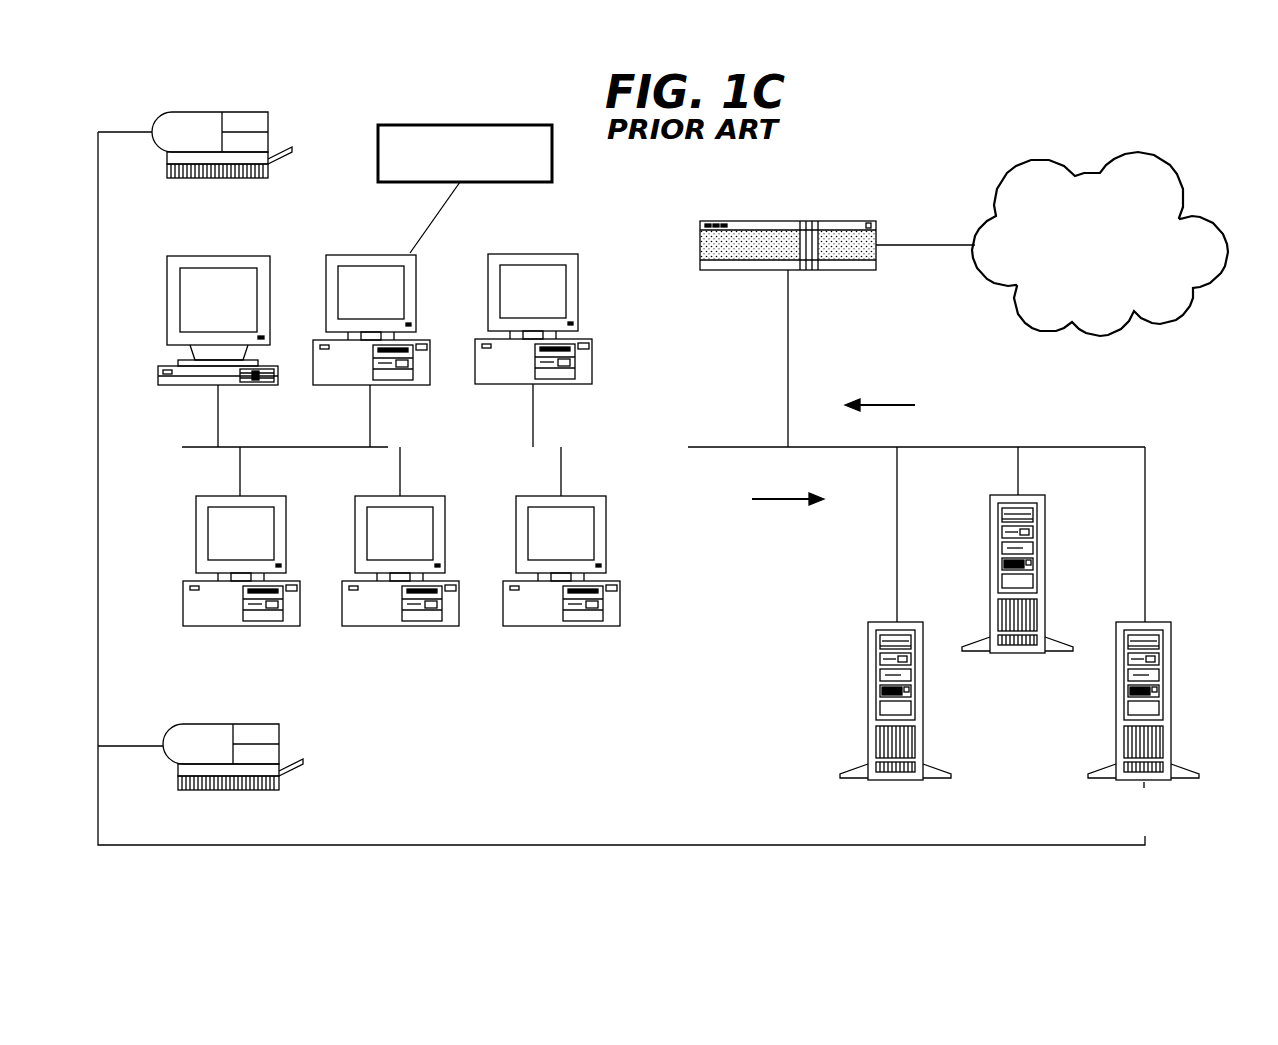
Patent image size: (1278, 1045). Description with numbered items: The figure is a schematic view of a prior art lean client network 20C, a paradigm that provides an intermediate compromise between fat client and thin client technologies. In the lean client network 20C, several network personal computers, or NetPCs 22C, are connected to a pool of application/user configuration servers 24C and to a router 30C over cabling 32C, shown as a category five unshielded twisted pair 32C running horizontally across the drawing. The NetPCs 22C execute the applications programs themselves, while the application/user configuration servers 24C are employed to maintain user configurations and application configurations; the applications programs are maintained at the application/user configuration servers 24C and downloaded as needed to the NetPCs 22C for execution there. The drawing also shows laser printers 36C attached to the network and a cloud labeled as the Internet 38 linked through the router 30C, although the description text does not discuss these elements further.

The lean client network 20C is at (920, 120).
The network personal computer (NetPC) 22C is at (570, 291).
The application/user configuration server 24C is at (868, 676).
The router 30C is at (785, 222).
The cabling (category 5 unshielded twisted pair) 32C is at (760, 446).
The laser printer 36C is at (268, 121).
The internet 38 is at (1080, 165).